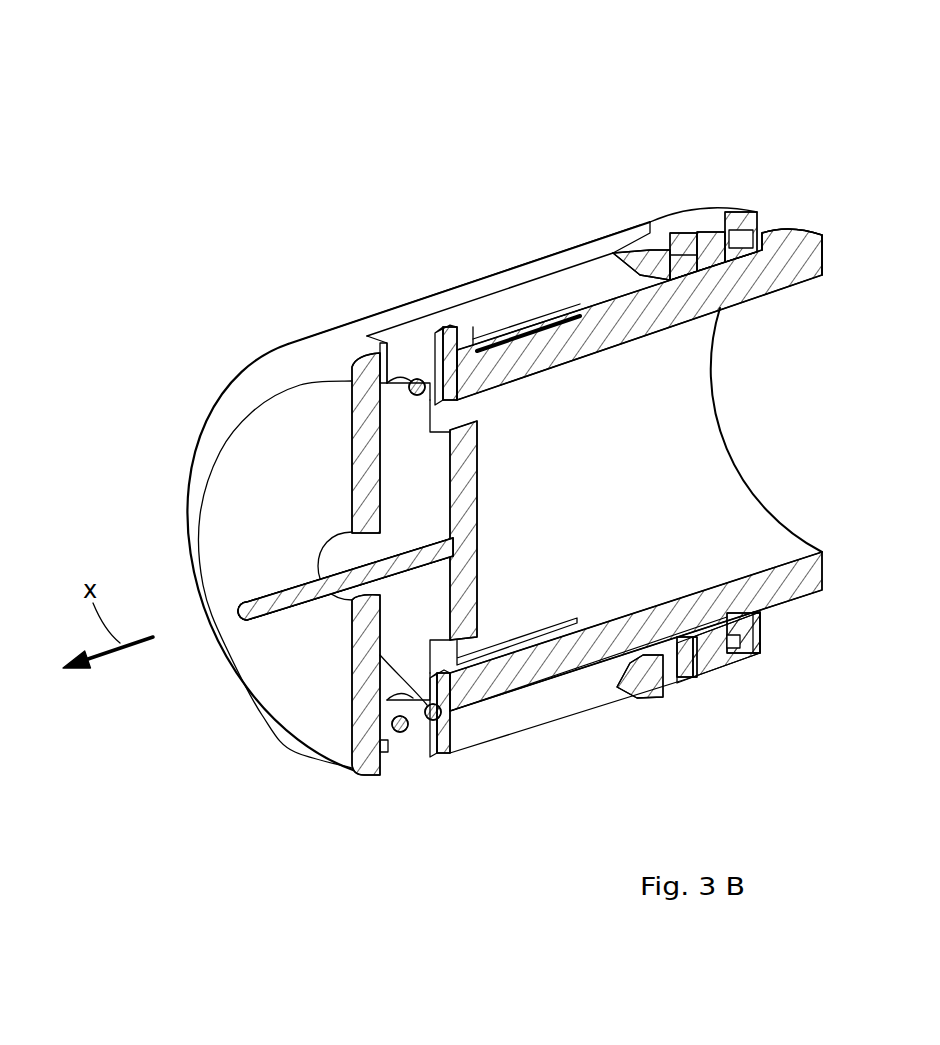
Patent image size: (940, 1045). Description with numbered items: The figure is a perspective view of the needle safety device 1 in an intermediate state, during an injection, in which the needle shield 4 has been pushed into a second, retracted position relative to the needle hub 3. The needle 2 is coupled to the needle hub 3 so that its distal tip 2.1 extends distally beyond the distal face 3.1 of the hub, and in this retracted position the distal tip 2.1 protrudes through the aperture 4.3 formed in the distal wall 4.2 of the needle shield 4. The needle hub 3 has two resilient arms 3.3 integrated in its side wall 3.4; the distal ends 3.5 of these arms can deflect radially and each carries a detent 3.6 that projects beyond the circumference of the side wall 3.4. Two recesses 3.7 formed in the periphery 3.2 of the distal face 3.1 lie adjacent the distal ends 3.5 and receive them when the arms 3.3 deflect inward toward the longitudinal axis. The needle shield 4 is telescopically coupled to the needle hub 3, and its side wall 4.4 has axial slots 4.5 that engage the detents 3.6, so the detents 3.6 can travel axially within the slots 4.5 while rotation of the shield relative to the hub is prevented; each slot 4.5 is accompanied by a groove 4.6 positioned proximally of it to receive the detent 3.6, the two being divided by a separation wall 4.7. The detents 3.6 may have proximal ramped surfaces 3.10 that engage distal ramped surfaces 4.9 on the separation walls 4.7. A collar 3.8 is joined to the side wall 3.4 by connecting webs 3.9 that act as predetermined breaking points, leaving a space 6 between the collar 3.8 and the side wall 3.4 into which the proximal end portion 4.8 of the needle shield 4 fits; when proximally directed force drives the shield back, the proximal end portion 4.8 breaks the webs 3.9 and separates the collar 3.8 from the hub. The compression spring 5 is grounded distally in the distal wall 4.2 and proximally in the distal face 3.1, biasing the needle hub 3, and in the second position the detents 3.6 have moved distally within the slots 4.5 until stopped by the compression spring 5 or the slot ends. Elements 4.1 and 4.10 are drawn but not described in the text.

The needle safety device 1 is at (366, 180).
The needle 2 is at (421, 512).
The distal tip 2.1 is at (247, 610).
The needle hub 3 is at (840, 250).
The distal face 3.1 is at (400, 423).
The periphery 3.2 is at (478, 527).
The resilient arms 3.3 is at (555, 382).
The side wall 3.4 is at (780, 231).
The distal ends 3.5 is at (412, 338).
The detent 3.6 is at (434, 337).
The recesses 3.7 is at (450, 410).
The collar 3.8 is at (730, 207).
The connecting webs 3.9 is at (793, 280).
The proximal ramped surfaces 3.10 is at (470, 327).
The needle shield 4 is at (322, 318).
The cap shell 4.1 is at (237, 490).
The distal wall 4.2 is at (367, 707).
The aperture 4.3 is at (347, 547).
The side wall 4.4 is at (523, 270).
The axial slots 4.5 is at (587, 277).
The groove 4.6 is at (695, 240).
The separation wall 4.7 is at (665, 235).
The proximal end portion 4.8 is at (760, 630).
The distal ramped surfaces 4.9 is at (640, 268).
The latch recess 4.10 is at (685, 262).
The compression spring 5 is at (397, 752).
The space 6 is at (762, 262).